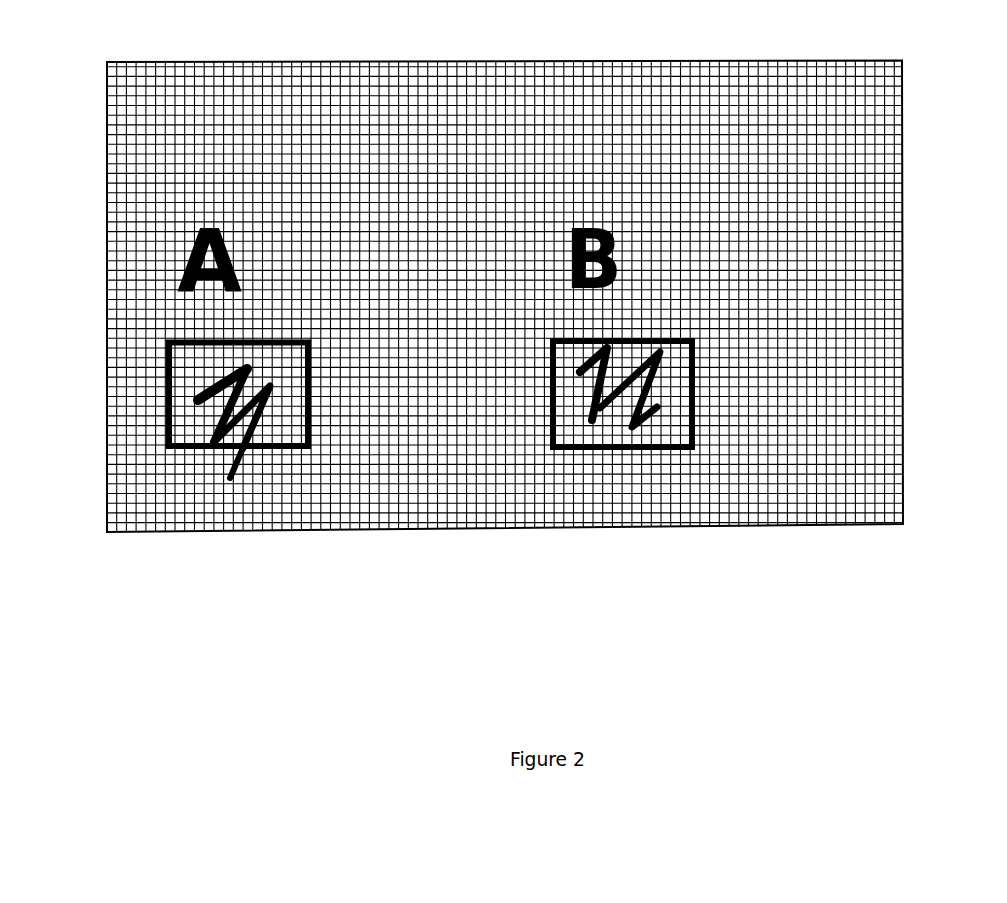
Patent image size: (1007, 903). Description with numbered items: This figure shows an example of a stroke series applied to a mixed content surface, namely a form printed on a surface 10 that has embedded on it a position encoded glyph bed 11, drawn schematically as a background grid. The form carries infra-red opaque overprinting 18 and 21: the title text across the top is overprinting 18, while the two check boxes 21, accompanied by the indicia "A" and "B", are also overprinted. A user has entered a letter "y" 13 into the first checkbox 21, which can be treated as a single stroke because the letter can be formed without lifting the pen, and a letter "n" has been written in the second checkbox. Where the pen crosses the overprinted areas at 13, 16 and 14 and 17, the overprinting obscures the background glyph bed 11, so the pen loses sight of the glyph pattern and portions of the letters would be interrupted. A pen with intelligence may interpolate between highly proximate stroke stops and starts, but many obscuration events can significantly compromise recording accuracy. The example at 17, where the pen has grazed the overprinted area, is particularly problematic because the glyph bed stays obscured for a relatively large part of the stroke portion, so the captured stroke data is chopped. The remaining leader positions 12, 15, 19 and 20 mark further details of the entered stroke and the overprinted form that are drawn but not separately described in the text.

The surface 10 is at (505, 360).
The position encoded glyph bed 11 is at (530, 487).
The handwritten entry 12 is at (230, 474).
The letter "y" 13 is at (210, 448).
The crossing point 14 is at (258, 452).
The handwritten stroke tail 15 is at (280, 450).
The overprinted area crossing 16 is at (263, 447).
The grazed overprinted area 17 is at (622, 342).
The infra-red opaque overprinting 18 is at (457, 113).
The form number 19 is at (387, 112).
The entry field A 20 is at (219, 339).
The check boxes 21 is at (167, 372).